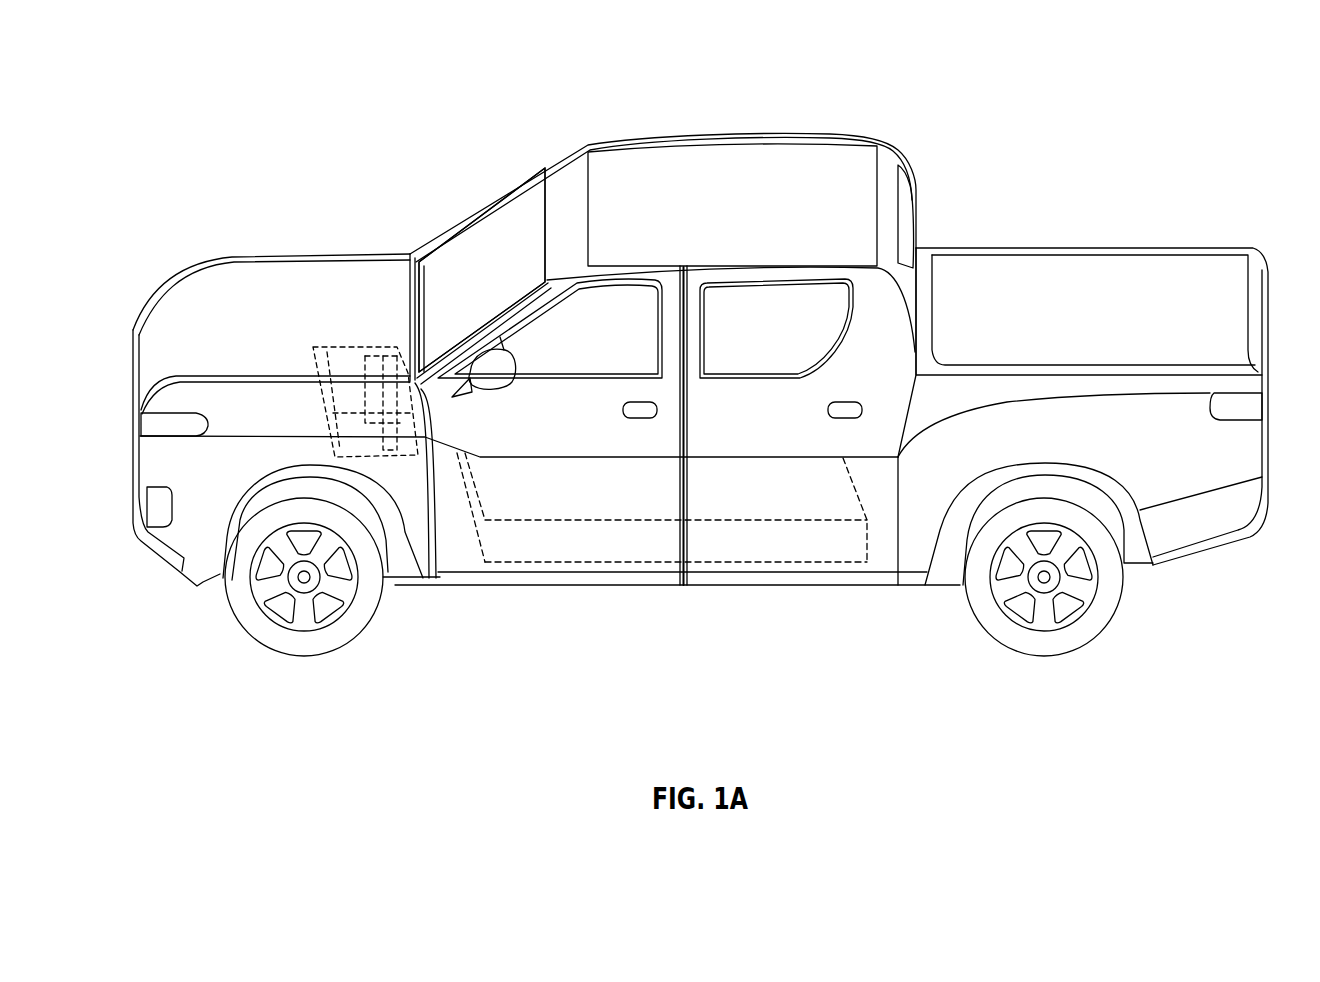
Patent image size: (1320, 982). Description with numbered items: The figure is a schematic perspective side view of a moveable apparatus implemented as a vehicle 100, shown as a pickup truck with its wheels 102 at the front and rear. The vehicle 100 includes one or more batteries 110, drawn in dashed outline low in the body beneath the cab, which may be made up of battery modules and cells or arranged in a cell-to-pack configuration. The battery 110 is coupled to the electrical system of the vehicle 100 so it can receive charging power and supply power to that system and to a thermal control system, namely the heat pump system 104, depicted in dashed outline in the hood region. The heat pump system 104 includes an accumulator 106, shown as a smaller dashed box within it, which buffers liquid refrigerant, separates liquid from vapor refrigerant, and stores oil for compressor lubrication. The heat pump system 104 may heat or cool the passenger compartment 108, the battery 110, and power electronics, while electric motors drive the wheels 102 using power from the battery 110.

The vehicle 100 is at (221, 91).
The wheels 102 is at (291, 645).
The heat pump system 104 is at (333, 347).
The accumulator 106 is at (368, 354).
The passenger compartment 108 is at (491, 273).
The battery 110 is at (568, 548).